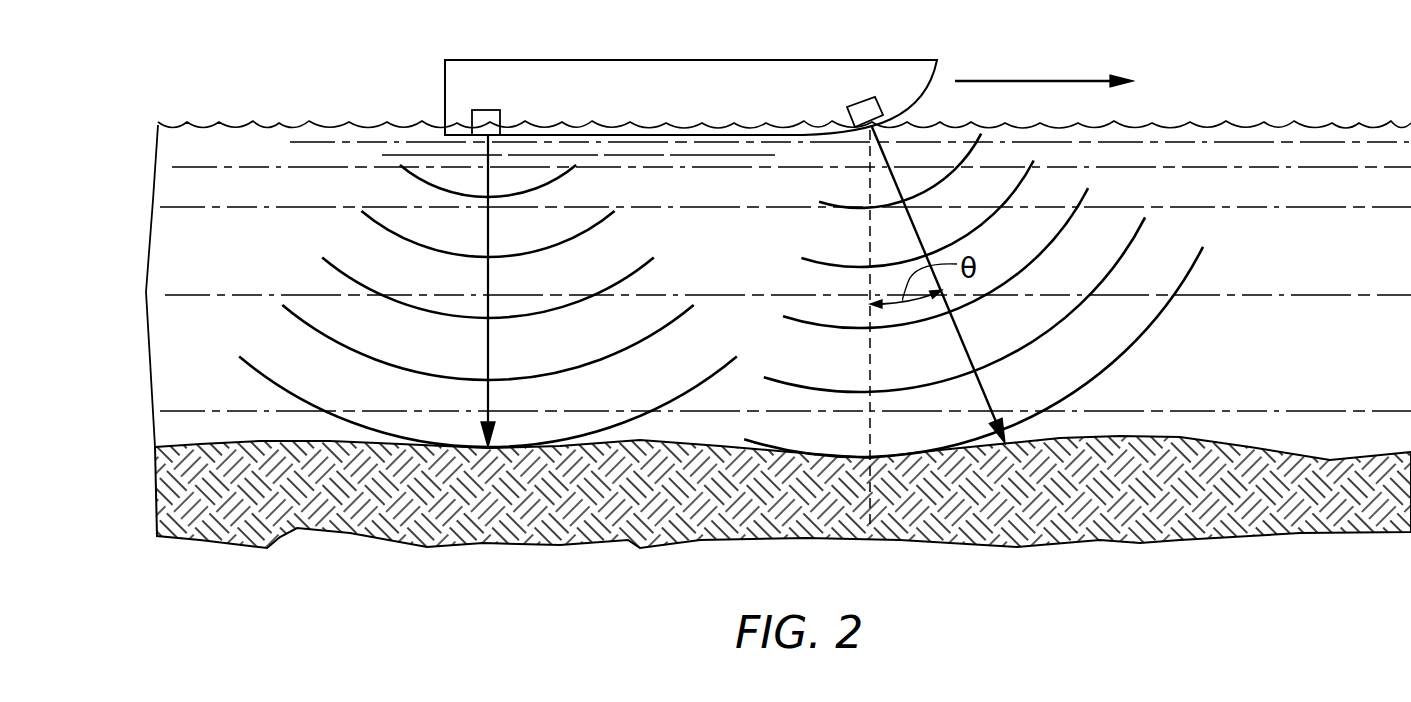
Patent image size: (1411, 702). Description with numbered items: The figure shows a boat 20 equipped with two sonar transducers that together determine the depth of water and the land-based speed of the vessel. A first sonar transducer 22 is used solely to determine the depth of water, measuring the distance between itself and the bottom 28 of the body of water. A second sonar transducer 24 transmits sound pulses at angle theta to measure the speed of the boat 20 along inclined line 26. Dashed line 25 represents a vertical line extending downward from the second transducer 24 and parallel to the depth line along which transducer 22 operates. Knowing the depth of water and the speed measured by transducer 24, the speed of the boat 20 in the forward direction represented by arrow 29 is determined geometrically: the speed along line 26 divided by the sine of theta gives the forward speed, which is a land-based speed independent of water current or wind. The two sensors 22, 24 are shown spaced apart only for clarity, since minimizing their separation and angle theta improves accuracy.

The boat 20 is at (688, 60).
The first sonar transducer 22 is at (488, 118).
The second sonar transducer 24 is at (878, 100).
The dashed line 25 is at (868, 442).
The line 26 is at (990, 397).
The bottom 28 is at (196, 445).
The arrow 29 is at (1032, 80).